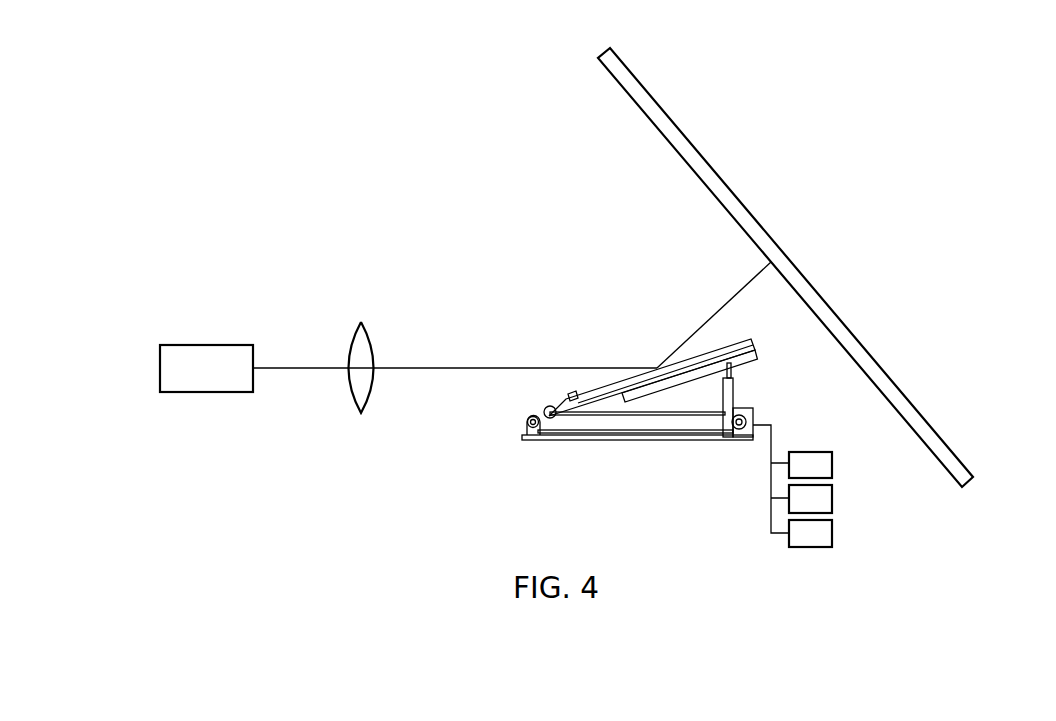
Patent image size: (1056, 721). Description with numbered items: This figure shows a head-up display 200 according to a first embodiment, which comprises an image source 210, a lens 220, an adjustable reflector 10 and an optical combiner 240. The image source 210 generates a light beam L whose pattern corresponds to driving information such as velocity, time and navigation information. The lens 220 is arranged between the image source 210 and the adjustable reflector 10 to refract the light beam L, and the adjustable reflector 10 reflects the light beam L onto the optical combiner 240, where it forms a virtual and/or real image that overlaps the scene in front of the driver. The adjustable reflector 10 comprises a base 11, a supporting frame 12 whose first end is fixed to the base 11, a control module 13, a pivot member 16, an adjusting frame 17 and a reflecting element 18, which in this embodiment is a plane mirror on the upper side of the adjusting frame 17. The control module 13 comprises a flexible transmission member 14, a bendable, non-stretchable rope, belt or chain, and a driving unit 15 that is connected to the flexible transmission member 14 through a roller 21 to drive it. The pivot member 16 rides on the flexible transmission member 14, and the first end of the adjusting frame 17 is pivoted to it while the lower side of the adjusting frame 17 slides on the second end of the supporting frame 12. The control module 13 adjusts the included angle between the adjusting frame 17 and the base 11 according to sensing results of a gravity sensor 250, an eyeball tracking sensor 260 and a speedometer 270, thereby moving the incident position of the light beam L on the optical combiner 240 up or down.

The head-up display 200 is at (363, 128).
The image source 210 is at (212, 344).
The light beam L is at (309, 356).
The lens 220 is at (361, 413).
The optical combiner 240 is at (921, 441).
The adjustable reflector 10 is at (590, 492).
The base 11 is at (630, 440).
The supporting frame 12 is at (730, 438).
The control module 13 is at (752, 403).
The flexible transmission member 14 is at (667, 433).
The driving unit 15 is at (753, 417).
The pivot member 16 is at (551, 419).
The adjusting frame 17 is at (575, 395).
The reflecting element 18 is at (753, 342).
The roller 21 is at (745, 430).
The gravity sensor 250 is at (810, 465).
The eyeball tracking sensor 260 is at (810, 499).
The speedometer 270 is at (810, 533).